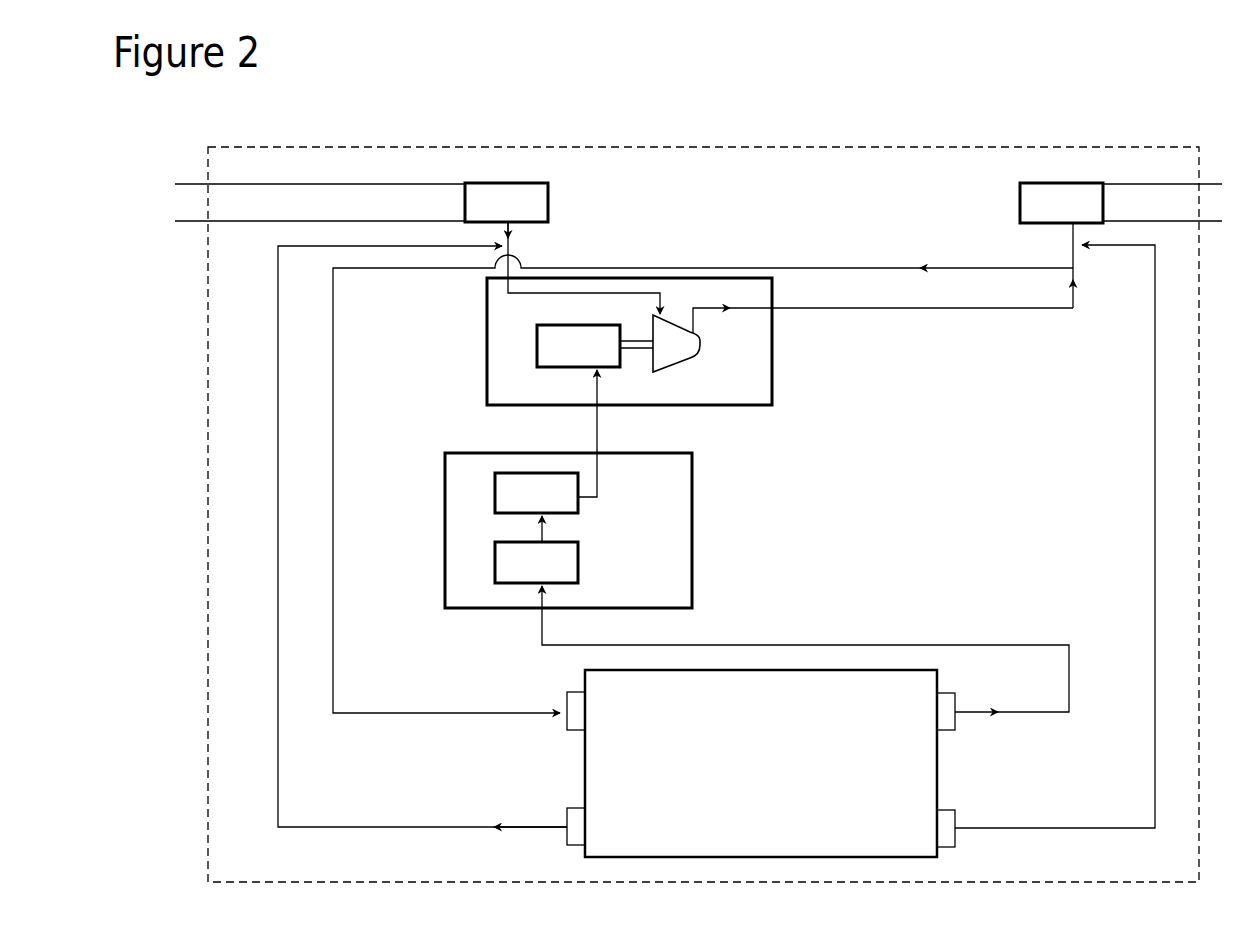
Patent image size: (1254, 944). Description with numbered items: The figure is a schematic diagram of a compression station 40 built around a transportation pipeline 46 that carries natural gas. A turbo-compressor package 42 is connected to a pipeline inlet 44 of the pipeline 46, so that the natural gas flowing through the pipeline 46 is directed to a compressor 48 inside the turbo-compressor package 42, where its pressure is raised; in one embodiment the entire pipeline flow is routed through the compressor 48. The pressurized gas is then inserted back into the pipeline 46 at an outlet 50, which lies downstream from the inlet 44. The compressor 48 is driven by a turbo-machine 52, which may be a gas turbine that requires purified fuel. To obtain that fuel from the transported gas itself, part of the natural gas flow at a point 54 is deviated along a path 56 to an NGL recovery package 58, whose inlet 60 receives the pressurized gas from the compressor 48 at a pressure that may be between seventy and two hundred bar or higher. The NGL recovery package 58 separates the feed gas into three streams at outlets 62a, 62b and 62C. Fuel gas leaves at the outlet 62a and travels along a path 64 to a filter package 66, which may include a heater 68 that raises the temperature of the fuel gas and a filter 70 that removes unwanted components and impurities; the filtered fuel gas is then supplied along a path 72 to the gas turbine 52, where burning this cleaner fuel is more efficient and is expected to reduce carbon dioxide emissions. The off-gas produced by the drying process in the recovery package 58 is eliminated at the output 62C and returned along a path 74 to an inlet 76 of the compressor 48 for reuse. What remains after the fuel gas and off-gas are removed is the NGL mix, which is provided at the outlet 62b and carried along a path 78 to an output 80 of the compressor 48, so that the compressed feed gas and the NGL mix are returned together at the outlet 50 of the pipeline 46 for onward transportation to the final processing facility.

The compression station 40 is at (808, 147).
The transportation pipeline 46 is at (180, 184).
The pipeline inlet 44 is at (550, 196).
The outlet 50 is at (1055, 183).
The inlet of the compressor 76 is at (620, 293).
The path 56 is at (333, 652).
The path 74 is at (278, 790).
The turbo-compressor package 42 is at (773, 371).
The turbo-machine 52 is at (545, 346).
The compressor 48 is at (682, 357).
The output of the compressor 80 is at (828, 308).
The point 54 is at (1075, 262).
The path 78 is at (1153, 492).
The filter package 66 is at (692, 534).
The filter 70 is at (578, 507).
The heater 68 is at (580, 563).
The path 72 is at (597, 432).
The path 64 is at (760, 645).
The NGL recovery package 58 is at (830, 670).
The inlet 60 is at (568, 692).
The outlet 62a is at (947, 693).
The outlet 62b is at (948, 810).
The output 62C is at (568, 840).